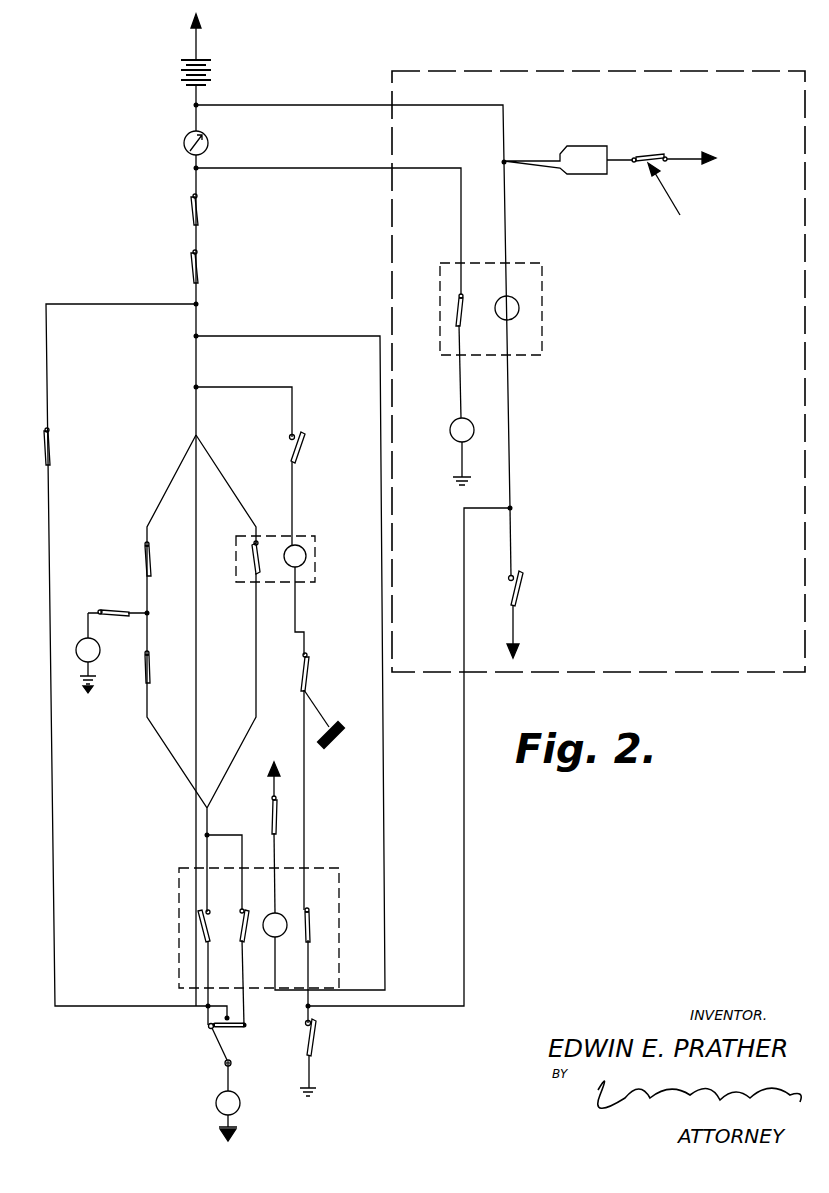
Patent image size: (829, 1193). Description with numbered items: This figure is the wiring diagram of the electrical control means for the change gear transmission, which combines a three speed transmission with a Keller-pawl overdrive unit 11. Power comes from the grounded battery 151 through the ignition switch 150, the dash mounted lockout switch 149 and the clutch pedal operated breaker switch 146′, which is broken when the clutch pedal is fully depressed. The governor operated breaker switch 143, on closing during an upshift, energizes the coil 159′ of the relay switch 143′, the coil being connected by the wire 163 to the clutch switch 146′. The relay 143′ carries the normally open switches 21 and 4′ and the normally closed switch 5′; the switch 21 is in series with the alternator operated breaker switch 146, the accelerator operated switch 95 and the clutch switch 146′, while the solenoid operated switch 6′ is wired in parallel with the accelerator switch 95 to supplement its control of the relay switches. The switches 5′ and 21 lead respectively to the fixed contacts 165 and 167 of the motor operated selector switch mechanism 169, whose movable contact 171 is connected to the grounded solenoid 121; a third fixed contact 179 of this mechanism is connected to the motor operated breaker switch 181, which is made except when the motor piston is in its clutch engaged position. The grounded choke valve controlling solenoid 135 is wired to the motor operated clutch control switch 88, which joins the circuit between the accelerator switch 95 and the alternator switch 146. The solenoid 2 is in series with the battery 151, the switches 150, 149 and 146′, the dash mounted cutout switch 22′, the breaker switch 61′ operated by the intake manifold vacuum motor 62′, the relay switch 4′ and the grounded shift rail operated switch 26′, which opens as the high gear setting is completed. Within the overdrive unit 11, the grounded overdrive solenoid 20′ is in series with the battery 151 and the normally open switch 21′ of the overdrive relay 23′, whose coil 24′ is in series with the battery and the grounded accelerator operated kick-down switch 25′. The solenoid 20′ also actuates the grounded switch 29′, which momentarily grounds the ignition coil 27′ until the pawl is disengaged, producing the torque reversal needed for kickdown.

The solenoid 2 is at (302, 548).
The normally open switch 4′ is at (312, 926).
The normally closed switch 5′ is at (240, 918).
The solenoid operated switch 6′ is at (250, 555).
The Keller-pawl overdrive mechanism 11 is at (678, 668).
The overdrive operated solenoid 20′ is at (456, 440).
The normally open relay switch 21 is at (198, 924).
The normally open switch of overdrive relay 21′ is at (455, 306).
The dash mounted cutout switch 22′ is at (304, 441).
The overdrive relay 23′ is at (438, 263).
The relay coil 24′ is at (515, 317).
The accelerator operated kick-down switch 25′ is at (522, 586).
The shift rail operated switch 26′ is at (318, 1041).
The ignition coil 27′ is at (581, 146).
The grounded switch 29′ is at (640, 156).
The breaker switch 61′ is at (311, 672).
The intake manifold vacuum operated motor 62′ is at (333, 744).
The motor operated clutch control switch 88 is at (112, 608).
The accelerator operated switch 95 is at (145, 550).
The solenoid 121 is at (216, 1104).
The choke valve controlling solenoid 135 is at (82, 656).
The breaker switch 143 is at (272, 810).
The relay switch 143′ is at (190, 868).
The breaker switch 146 is at (152, 668).
The clutch operated breaker switch 146′ is at (192, 264).
The dash mounted lockout switch 149 is at (192, 206).
The ignition switch 150 is at (183, 143).
The battery 151 is at (212, 70).
The relay coil 159′ is at (283, 910).
The wire 163 is at (271, 834).
The fixed contact 165 is at (246, 1023).
The fixed contact 167 is at (208, 1026).
The selector switch mechanism 169 is at (231, 1035).
The movable contact 171 is at (217, 1034).
The fixed contact 179 is at (227, 1016).
The motor operated breaker switch 181 is at (55, 447).